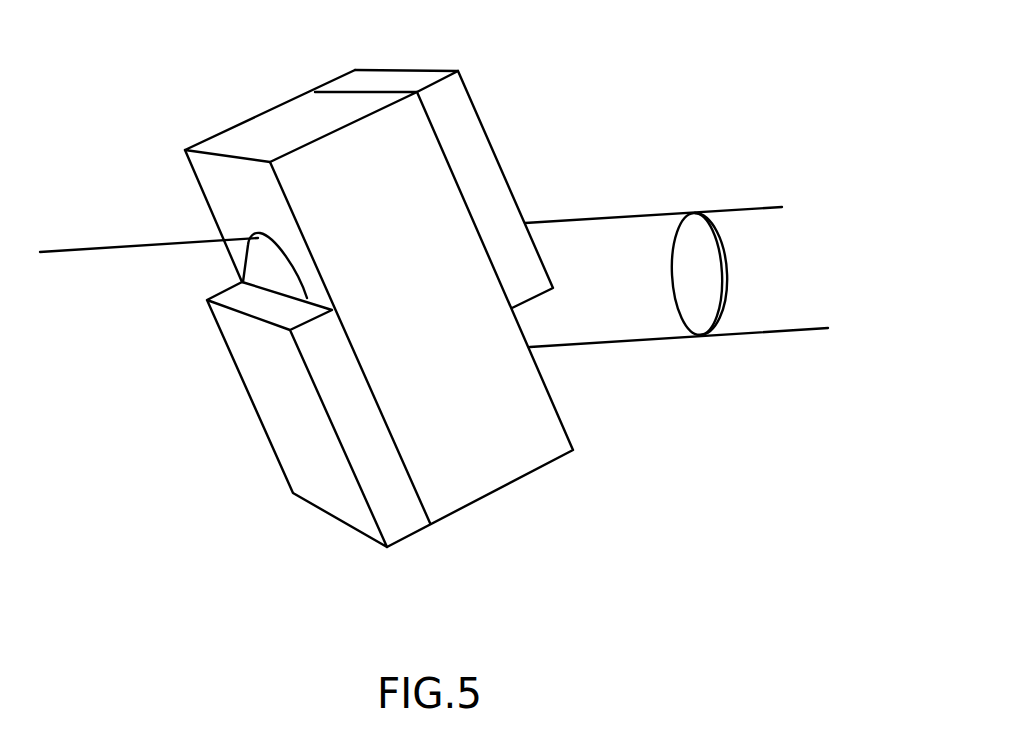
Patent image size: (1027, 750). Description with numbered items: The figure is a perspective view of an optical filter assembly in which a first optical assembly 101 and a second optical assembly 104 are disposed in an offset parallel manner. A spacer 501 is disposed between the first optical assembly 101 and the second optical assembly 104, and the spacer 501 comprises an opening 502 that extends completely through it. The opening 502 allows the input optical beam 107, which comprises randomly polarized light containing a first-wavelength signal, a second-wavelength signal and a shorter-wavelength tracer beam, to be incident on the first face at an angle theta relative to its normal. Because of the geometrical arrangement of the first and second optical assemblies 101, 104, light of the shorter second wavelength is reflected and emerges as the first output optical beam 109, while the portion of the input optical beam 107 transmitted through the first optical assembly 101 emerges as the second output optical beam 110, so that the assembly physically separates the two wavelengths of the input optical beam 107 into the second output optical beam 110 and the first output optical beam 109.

The first optical assembly 101 is at (477, 107).
The second optical assembly 104 is at (320, 485).
The input optical beam 107 is at (90, 249).
The first output optical beam 109 is at (660, 340).
The second output optical beam 110 is at (632, 216).
The spacer 501 is at (296, 125).
The opening 502 is at (272, 265).